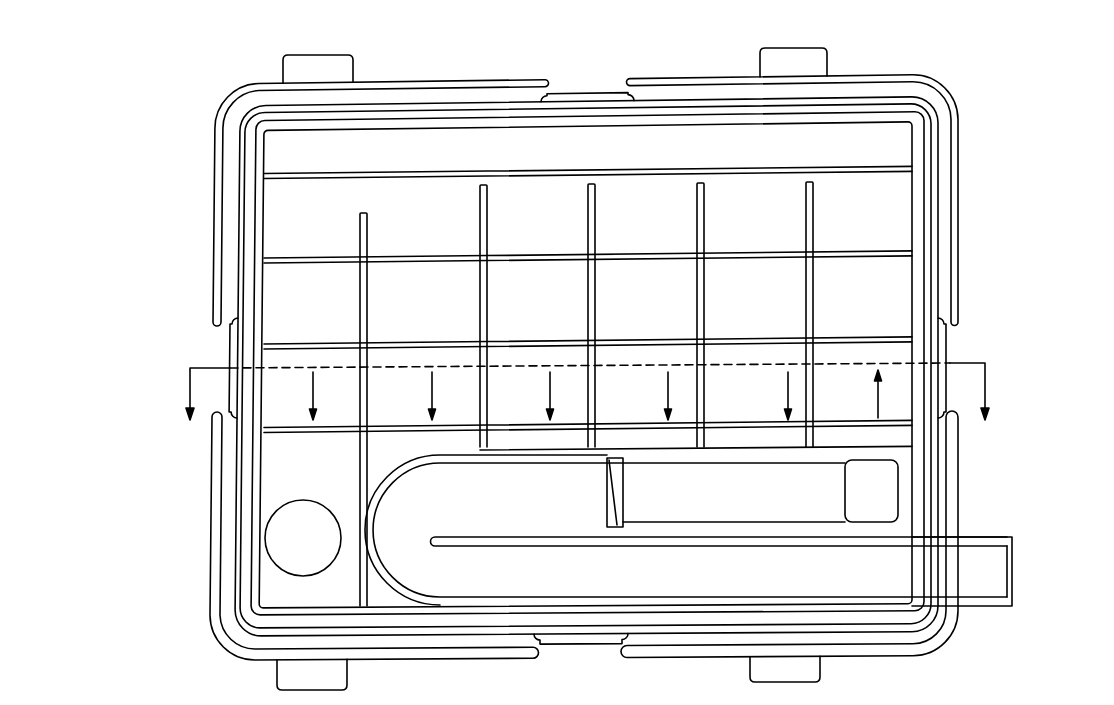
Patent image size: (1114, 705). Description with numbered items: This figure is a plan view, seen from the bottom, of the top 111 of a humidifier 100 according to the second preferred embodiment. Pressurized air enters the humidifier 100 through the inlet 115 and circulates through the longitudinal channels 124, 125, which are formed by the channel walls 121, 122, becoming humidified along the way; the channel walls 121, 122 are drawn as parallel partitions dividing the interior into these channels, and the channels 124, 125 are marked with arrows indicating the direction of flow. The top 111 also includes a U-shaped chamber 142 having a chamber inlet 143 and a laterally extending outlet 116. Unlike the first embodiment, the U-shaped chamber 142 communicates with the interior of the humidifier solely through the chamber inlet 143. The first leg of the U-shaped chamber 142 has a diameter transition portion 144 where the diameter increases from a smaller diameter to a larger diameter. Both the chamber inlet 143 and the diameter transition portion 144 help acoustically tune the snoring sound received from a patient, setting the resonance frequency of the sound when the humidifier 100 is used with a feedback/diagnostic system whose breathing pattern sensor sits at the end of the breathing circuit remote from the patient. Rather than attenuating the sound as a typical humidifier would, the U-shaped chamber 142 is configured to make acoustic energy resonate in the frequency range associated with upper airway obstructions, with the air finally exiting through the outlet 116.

The humidifier 100 is at (975, 190).
The top 111 is at (973, 267).
The inlet 115 is at (293, 530).
The outlet 116 is at (990, 563).
The channel wall 121 is at (368, 297).
The channel walls 122 is at (488, 297).
The longitudinal channel 124 is at (292, 396).
The longitudinal channels 125 is at (633, 395).
The U-shaped chamber 142 is at (447, 592).
The chamber inlet 143 is at (893, 478).
The diameter transition portion 144 is at (608, 490).